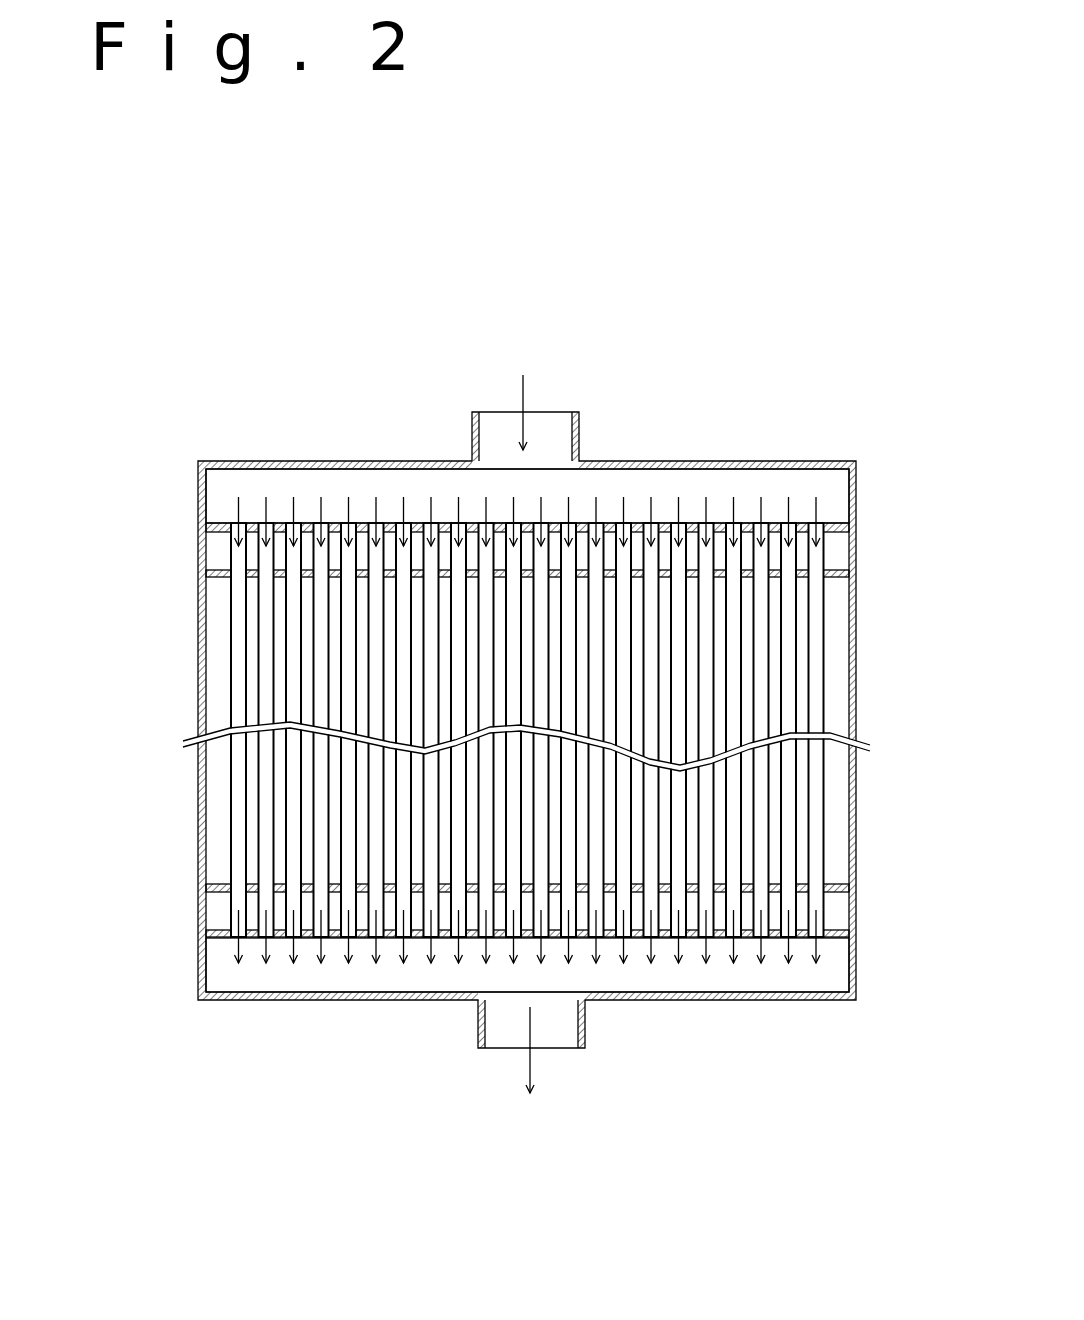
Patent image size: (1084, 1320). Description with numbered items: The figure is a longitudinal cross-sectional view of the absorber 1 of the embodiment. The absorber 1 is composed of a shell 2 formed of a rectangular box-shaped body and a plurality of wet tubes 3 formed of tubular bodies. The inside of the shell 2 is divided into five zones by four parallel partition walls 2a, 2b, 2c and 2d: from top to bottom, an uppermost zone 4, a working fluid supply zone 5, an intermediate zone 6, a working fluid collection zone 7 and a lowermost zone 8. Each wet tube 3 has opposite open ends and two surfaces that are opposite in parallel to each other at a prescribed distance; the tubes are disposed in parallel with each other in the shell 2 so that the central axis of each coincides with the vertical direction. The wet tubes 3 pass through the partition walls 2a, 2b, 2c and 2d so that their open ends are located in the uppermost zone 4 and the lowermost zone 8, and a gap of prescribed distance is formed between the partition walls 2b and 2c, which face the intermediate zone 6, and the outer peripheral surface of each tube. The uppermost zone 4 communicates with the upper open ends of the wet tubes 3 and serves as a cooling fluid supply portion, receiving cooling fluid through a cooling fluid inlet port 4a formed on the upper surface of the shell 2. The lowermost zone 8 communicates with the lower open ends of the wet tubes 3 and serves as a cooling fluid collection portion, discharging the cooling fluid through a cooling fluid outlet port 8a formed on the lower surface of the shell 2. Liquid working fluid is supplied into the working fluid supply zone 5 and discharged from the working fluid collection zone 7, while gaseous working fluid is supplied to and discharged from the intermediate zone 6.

The absorber 1 is at (304, 247).
The shell 2 is at (660, 463).
The partition wall 2a is at (832, 527).
The partition wall 2b is at (830, 571).
The partition wall 2c is at (838, 895).
The partition wall 2d is at (849, 937).
The wet tube 3 is at (825, 800).
The uppermost zone 4 is at (355, 478).
The cooling fluid inlet port 4a is at (560, 413).
The working fluid supply zone 5 is at (215, 548).
The intermediate zone 6 is at (213, 650).
The working fluid collection zone 7 is at (220, 915).
The lowermost zone 8 is at (307, 978).
The cooling fluid outlet port 8a is at (570, 1045).